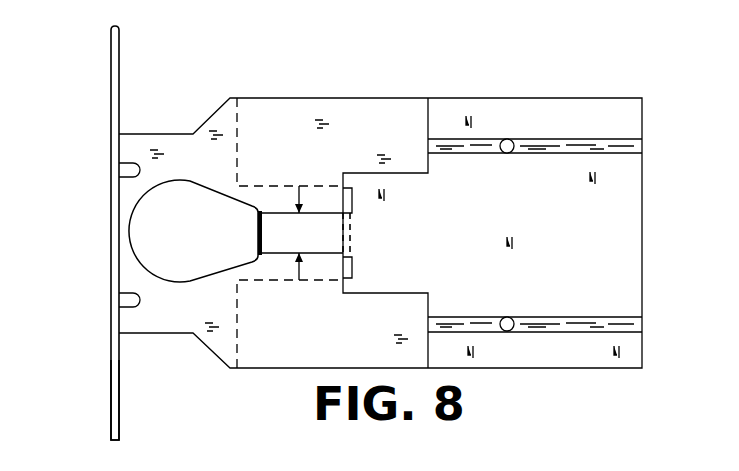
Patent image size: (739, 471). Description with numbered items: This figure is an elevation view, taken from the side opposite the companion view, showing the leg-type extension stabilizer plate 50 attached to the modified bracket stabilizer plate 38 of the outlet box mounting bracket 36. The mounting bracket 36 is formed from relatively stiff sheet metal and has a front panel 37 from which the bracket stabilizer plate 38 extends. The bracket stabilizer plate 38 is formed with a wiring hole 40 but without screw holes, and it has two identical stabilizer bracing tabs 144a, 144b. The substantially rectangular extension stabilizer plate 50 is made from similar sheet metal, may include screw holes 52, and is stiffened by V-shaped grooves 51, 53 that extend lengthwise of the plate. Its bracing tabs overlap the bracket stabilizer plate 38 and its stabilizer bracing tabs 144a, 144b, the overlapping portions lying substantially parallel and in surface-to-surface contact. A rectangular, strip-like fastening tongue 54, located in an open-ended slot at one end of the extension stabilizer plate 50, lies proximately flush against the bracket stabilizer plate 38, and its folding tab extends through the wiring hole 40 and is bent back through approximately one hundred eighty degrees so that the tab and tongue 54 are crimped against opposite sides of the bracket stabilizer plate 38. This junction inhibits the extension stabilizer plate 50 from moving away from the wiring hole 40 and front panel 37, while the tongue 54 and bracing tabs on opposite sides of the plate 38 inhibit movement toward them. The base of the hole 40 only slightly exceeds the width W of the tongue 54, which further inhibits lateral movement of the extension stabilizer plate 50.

The outlet box mounting bracket 36 is at (99, 216).
The front panel 37 is at (110, 354).
The bracket stabilizer plate 38 is at (327, 333).
The wiring hole 40 is at (193, 260).
The leg-type extension stabilizer plate 50 is at (529, 92).
The V-shaped groove 51 is at (611, 300).
The screw hole 52 is at (506, 154).
The V-shaped groove 53 is at (607, 141).
The fastening tongue 54 is at (324, 221).
The stabilizer bracing tab 144a is at (412, 108).
The stabilizer bracing tab 144b is at (433, 293).